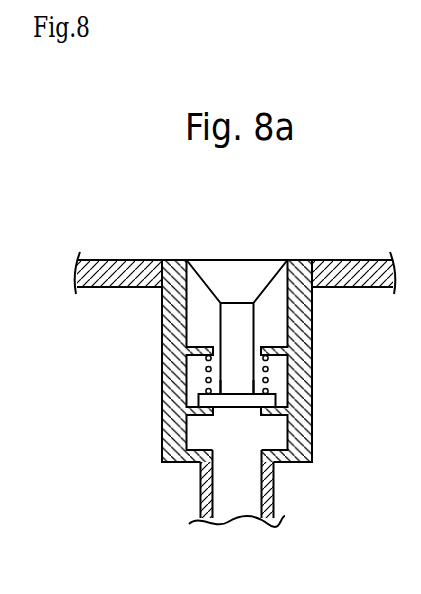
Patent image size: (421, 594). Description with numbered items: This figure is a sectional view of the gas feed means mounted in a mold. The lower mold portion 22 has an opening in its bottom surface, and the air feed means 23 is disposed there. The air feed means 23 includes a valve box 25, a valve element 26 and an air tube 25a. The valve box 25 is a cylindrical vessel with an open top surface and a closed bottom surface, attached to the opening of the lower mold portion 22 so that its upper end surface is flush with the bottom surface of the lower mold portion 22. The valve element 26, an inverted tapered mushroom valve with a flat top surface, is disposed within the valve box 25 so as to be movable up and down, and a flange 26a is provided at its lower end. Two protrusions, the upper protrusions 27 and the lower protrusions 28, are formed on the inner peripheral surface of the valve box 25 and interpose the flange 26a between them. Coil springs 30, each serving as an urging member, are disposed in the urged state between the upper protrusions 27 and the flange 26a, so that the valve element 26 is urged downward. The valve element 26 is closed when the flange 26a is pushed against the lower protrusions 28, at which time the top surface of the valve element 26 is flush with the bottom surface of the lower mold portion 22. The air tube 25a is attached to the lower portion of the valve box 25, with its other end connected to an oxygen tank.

The lower mold portion 22 is at (102, 259).
The air feed means 23 is at (119, 374).
The valve box 25 is at (163, 388).
The air tube 25a is at (275, 488).
The valve element 26 is at (242, 262).
The flange 26a is at (236, 401).
The upper protrusions 27 is at (203, 347).
The lower protrusions 28 is at (200, 414).
The coil springs 30 is at (268, 377).